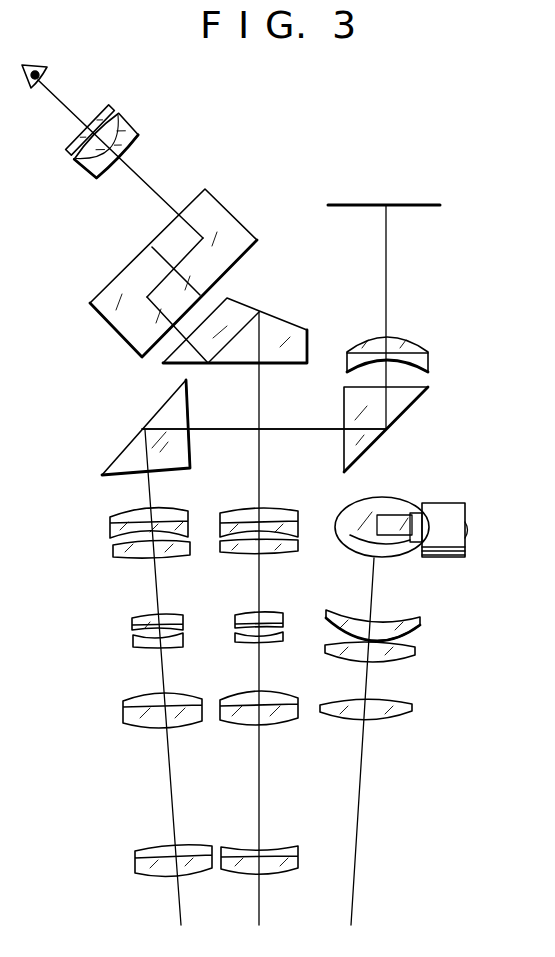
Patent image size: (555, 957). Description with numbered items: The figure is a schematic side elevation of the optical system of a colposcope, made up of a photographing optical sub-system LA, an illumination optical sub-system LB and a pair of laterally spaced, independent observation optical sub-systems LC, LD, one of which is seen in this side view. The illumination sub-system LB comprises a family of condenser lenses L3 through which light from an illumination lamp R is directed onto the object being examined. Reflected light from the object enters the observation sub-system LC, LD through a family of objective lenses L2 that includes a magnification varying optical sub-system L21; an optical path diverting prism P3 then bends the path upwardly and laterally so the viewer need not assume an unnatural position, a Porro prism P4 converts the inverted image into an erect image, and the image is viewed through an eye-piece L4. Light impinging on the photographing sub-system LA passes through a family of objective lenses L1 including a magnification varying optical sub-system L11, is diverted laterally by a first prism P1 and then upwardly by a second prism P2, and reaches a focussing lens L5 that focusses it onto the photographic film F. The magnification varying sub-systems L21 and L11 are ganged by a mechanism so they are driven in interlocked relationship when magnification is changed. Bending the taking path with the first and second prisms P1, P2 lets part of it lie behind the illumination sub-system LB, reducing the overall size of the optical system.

The eye-piece L4 is at (93, 152).
The Porro prism P4 is at (105, 293).
The optical path diverting prism P3 is at (287, 328).
The photographic film F is at (402, 207).
The photographing optical sub-system LA is at (430, 305).
The focussing lens L5 is at (418, 345).
The second prism P2 is at (398, 408).
The first prism P1 is at (123, 458).
The observation optical sub-system LC is at (292, 475).
The observation optical sub-system LD is at (327, 475).
The illumination lamp R is at (398, 503).
The illumination optical sub-system LB is at (415, 598).
The family of objective lenses L1 is at (125, 677).
The magnification varying optical sub-system L11 is at (139, 671).
The magnification varying optical sub-system L21 is at (225, 617).
The family of objective lenses L2 is at (257, 618).
The family of condenser lenses L3 is at (421, 615).